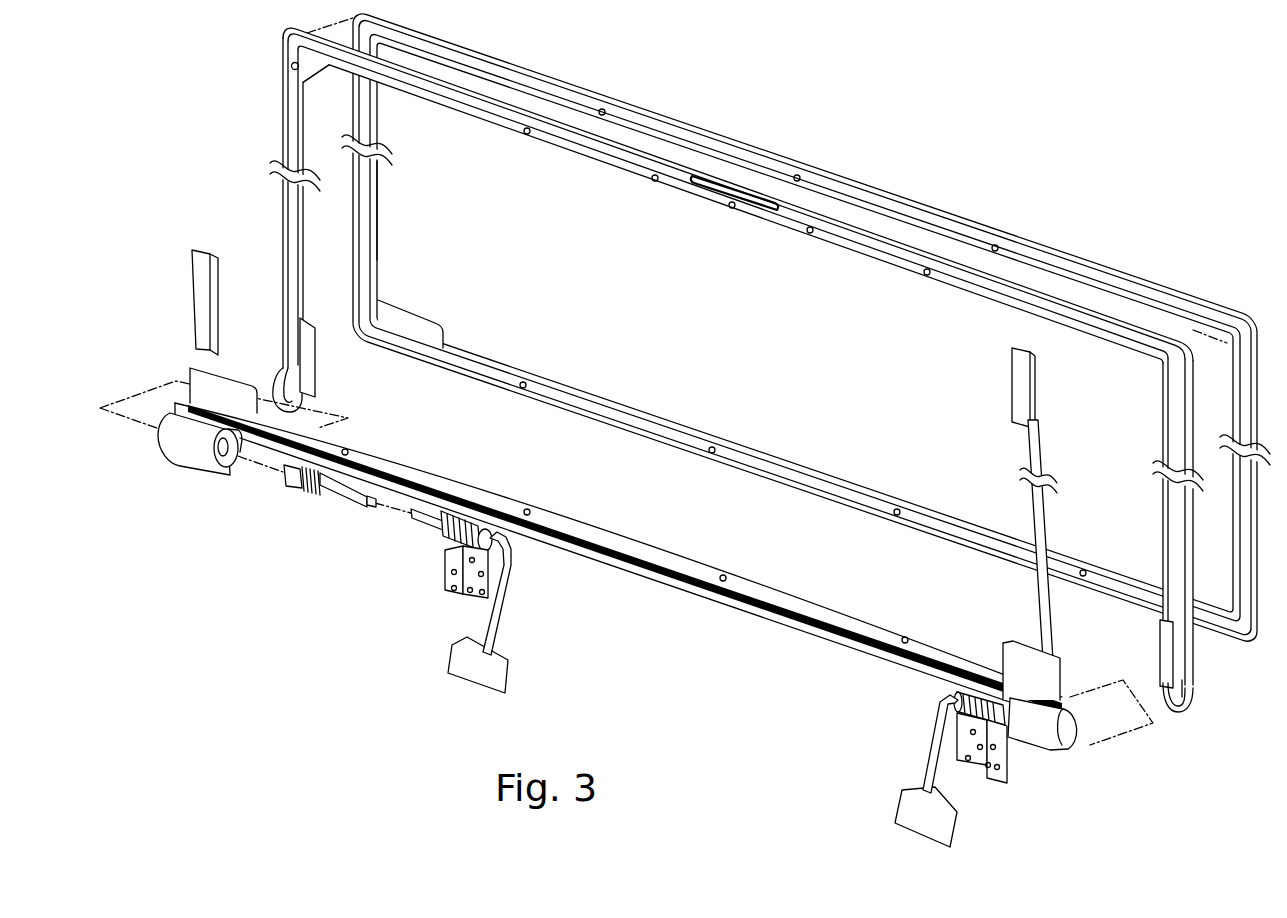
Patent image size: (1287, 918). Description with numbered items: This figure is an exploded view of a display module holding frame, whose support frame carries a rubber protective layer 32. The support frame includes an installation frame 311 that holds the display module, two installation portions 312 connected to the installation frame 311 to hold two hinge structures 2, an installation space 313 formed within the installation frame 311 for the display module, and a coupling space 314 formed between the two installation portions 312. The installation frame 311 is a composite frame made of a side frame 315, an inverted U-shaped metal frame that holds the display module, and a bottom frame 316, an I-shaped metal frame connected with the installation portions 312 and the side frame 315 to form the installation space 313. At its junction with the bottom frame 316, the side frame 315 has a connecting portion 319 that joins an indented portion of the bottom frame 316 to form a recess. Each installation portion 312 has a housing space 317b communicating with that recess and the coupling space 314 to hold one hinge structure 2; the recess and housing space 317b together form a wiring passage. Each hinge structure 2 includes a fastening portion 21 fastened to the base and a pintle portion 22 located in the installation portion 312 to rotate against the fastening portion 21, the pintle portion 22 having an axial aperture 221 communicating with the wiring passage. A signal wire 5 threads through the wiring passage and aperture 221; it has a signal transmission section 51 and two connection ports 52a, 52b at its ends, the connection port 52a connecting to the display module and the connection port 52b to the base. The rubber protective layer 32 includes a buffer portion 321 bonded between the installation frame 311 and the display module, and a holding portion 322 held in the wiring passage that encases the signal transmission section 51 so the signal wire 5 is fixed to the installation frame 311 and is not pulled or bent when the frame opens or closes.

The hinge structure 2 is at (950, 732).
The signal wire 5 is at (923, 757).
The fastening portion 21 is at (460, 595).
The pintle portion 22 is at (286, 499).
The axial aperture 221 is at (361, 513).
The signal transmission section 51 is at (423, 520).
The connection port 52a is at (204, 262).
The connection port 52b is at (500, 668).
The rubber protective layer 32 is at (1012, 224).
The buffer portion 321 is at (366, 213).
The holding portion 322 is at (417, 327).
The installation frame 311 is at (1195, 762).
The installation portion 312 is at (1033, 737).
The installation space 313 is at (300, 126).
The coupling space 314 is at (691, 612).
The side frame 315 is at (1172, 717).
The bottom frame 316 is at (1073, 703).
The housing space 317b is at (230, 457).
The connecting portion 319 is at (1158, 678).